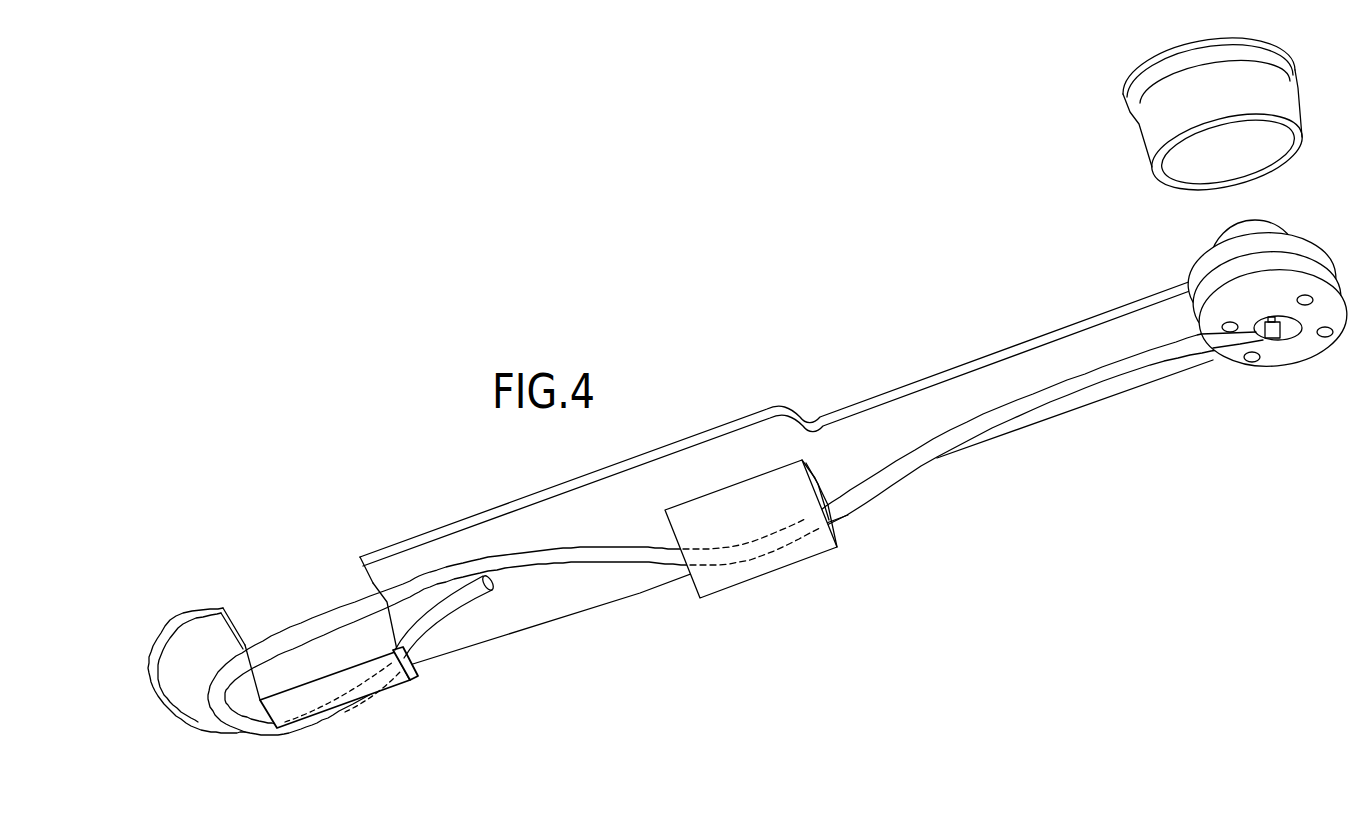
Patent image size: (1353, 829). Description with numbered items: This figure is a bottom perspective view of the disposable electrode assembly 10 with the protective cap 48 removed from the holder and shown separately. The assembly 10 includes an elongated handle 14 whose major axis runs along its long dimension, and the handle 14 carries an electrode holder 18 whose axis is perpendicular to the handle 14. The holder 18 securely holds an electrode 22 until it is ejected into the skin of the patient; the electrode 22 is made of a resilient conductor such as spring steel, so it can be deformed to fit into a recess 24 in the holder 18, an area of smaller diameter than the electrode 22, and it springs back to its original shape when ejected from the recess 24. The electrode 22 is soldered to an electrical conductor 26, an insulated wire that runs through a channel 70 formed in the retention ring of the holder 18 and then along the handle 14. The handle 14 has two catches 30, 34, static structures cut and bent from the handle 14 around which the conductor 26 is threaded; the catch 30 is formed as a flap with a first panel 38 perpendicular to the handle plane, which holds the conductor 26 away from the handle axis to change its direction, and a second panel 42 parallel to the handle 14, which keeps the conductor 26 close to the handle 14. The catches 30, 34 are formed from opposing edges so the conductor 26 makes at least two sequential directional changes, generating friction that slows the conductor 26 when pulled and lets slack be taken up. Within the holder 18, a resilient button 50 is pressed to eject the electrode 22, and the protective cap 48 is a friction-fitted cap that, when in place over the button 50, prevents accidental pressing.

The disposable electrode assembly 10 is at (749, 406).
The handle 14 is at (1098, 392).
The electrode holder 18 is at (1263, 320).
The electrode 22 is at (1274, 342).
The recess 24 is at (1296, 336).
The electrical conductor 26 is at (618, 552).
The catch 30 is at (398, 681).
The catch 34 is at (766, 567).
The first panel 38 is at (337, 650).
The second panel 42 is at (297, 708).
The protective cap 48 is at (1158, 131).
The button 50 is at (1208, 245).
The channel 70 is at (1232, 348).